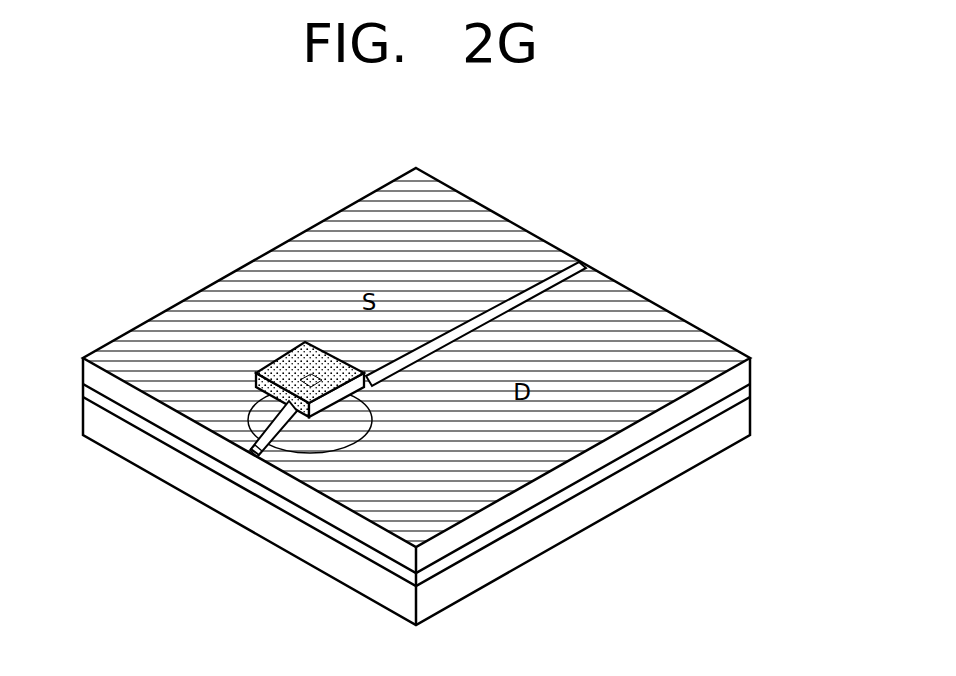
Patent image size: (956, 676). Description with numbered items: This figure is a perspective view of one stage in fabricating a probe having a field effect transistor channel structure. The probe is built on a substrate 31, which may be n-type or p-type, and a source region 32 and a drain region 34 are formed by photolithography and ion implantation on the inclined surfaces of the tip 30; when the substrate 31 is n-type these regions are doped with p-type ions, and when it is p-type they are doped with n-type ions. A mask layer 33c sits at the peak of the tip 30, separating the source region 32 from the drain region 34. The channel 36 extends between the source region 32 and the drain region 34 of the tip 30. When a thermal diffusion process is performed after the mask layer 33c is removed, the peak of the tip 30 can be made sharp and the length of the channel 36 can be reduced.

The tip 30 is at (279, 296).
The substrate 31 is at (757, 358).
The source region 32 is at (262, 452).
The mask layer 33c is at (300, 343).
The drain region 34 is at (325, 435).
The channel 36 is at (262, 433).